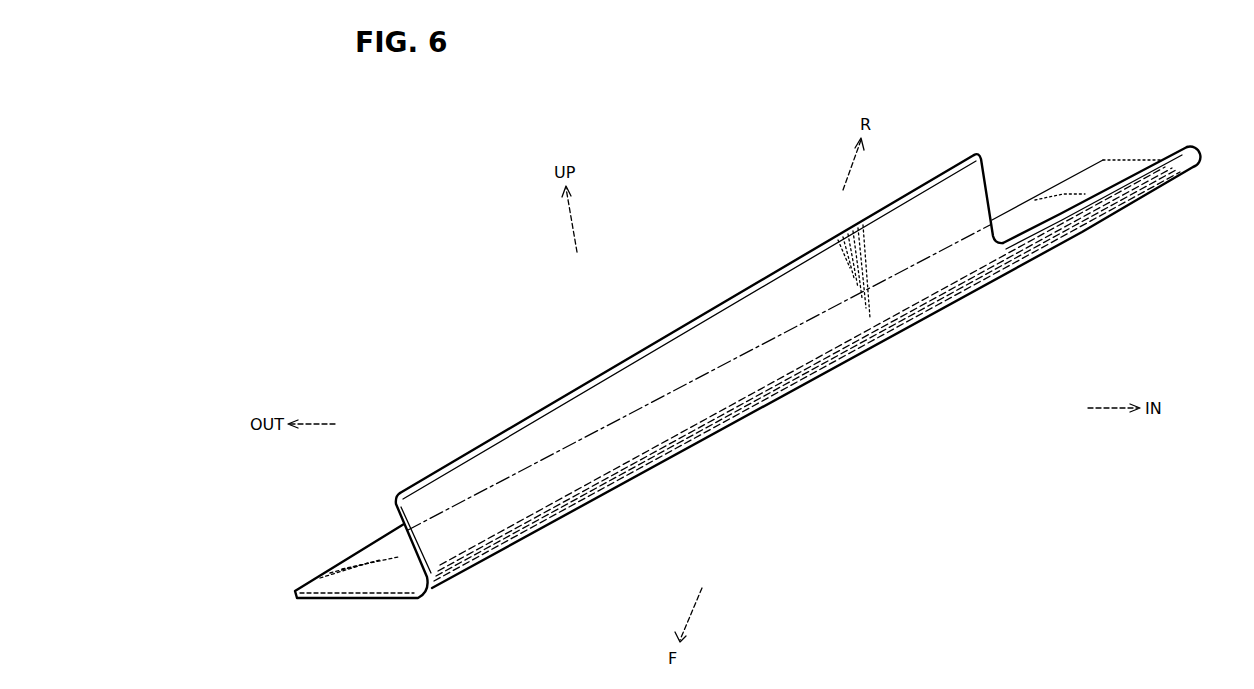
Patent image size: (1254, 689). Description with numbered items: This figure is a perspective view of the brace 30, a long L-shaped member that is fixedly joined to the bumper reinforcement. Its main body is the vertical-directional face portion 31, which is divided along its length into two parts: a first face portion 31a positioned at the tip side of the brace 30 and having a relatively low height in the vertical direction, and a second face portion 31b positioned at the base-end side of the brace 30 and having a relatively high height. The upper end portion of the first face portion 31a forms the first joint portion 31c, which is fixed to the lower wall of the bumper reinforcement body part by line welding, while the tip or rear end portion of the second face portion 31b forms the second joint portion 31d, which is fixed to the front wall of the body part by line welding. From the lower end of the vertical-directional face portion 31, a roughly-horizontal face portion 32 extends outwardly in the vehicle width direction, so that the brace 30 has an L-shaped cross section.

The brace 30 is at (700, 290).
The vertical-directional face portion 31 is at (848, 334).
The first face portion 31a is at (1086, 218).
The second face portion 31b is at (758, 370).
The first joint portion 31c is at (1107, 183).
The second joint portion 31d is at (988, 184).
The roughly-horizontal face portion 32 is at (377, 543).